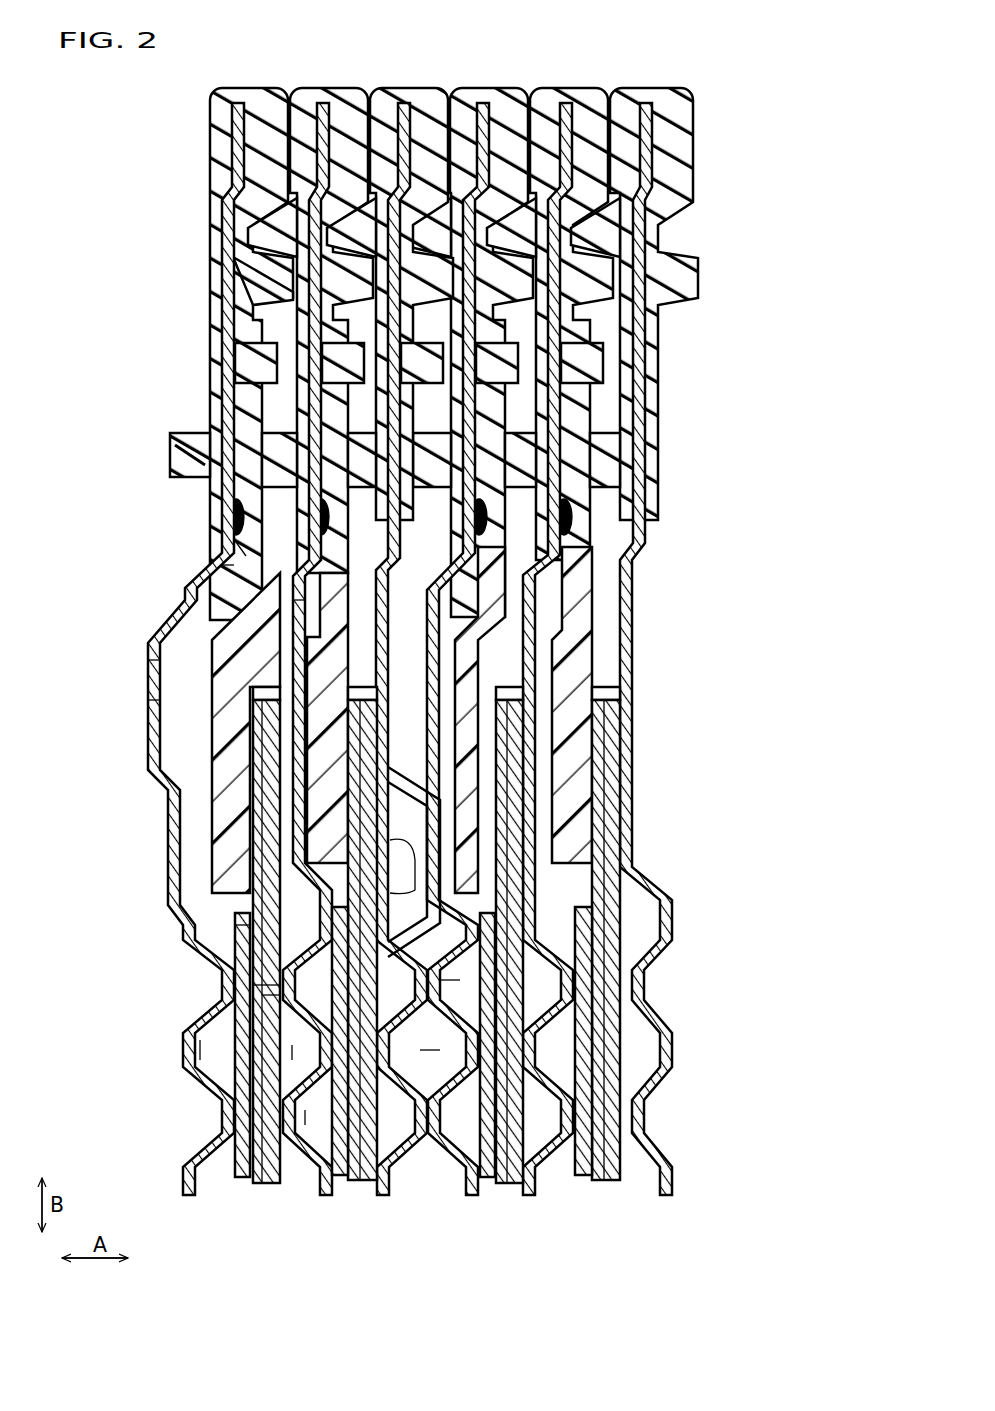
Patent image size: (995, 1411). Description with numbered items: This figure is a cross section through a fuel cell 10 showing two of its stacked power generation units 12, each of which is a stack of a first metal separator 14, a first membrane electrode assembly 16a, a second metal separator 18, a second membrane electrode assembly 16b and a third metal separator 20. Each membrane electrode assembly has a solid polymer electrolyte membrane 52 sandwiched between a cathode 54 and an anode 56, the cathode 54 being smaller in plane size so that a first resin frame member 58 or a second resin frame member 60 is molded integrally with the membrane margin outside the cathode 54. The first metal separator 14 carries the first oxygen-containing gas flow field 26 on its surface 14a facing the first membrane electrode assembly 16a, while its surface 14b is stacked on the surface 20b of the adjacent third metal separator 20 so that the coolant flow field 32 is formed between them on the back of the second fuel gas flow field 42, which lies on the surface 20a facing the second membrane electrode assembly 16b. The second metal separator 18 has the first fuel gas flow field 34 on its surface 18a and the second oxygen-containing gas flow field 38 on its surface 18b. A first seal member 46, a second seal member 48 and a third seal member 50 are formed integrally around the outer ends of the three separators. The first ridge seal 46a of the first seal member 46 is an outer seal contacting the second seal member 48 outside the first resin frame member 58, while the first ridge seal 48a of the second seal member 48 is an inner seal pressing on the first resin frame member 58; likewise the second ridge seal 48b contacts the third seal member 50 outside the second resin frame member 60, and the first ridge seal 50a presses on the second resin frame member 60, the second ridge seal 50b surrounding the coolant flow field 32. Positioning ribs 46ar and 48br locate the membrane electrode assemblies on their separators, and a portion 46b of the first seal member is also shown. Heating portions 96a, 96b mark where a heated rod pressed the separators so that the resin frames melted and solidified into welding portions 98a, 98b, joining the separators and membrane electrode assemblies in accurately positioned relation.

The fuel cell 10 is at (141, 101).
The power generation unit 12 is at (422, 1262).
The first metal separator 14 is at (188, 1198).
The surface 14a is at (166, 712).
The surface 14b is at (146, 673).
The first membrane electrode assembly 16a is at (258, 1188).
The second membrane electrode assembly 16b is at (352, 1188).
The second metal separator 18 is at (322, 1198).
The surface 18a is at (232, 560).
The surface 18b is at (300, 600).
The third metal separator 20 is at (388, 1198).
The surface 20a is at (404, 893).
The surface 20b is at (416, 835).
The first oxygen-containing gas flow field 26 is at (208, 1053).
The coolant flow field 32 is at (423, 1058).
The first fuel gas flow field 34 is at (293, 1053).
The second oxygen-containing gas flow field 38 is at (307, 1117).
The second fuel gas flow field 42 is at (393, 988).
The first seal member 46 is at (207, 146).
The first ridge seal 46a is at (277, 287).
The positioning rib 46ar is at (253, 366).
The first resin frame thick portion 46b is at (183, 442).
The second seal member 48 is at (345, 94).
The first ridge seal 48a is at (280, 447).
The second ridge seal 48b is at (357, 263).
The positioning rib 48br is at (348, 343).
The third seal member 50 is at (400, 94).
The first ridge seal 50a is at (363, 470).
The second ridge seal 50b is at (443, 295).
The solid polymer electrolyte membrane 52 is at (258, 983).
The cathode 54 is at (242, 928).
The anode 56 is at (268, 995).
The first resin frame member 58 is at (213, 826).
The second resin frame member 60 is at (290, 740).
The heating portion 96a is at (228, 517).
The heating portion 96b is at (240, 475).
The welding portion 98a is at (225, 505).
The welding portion 98b is at (325, 540).